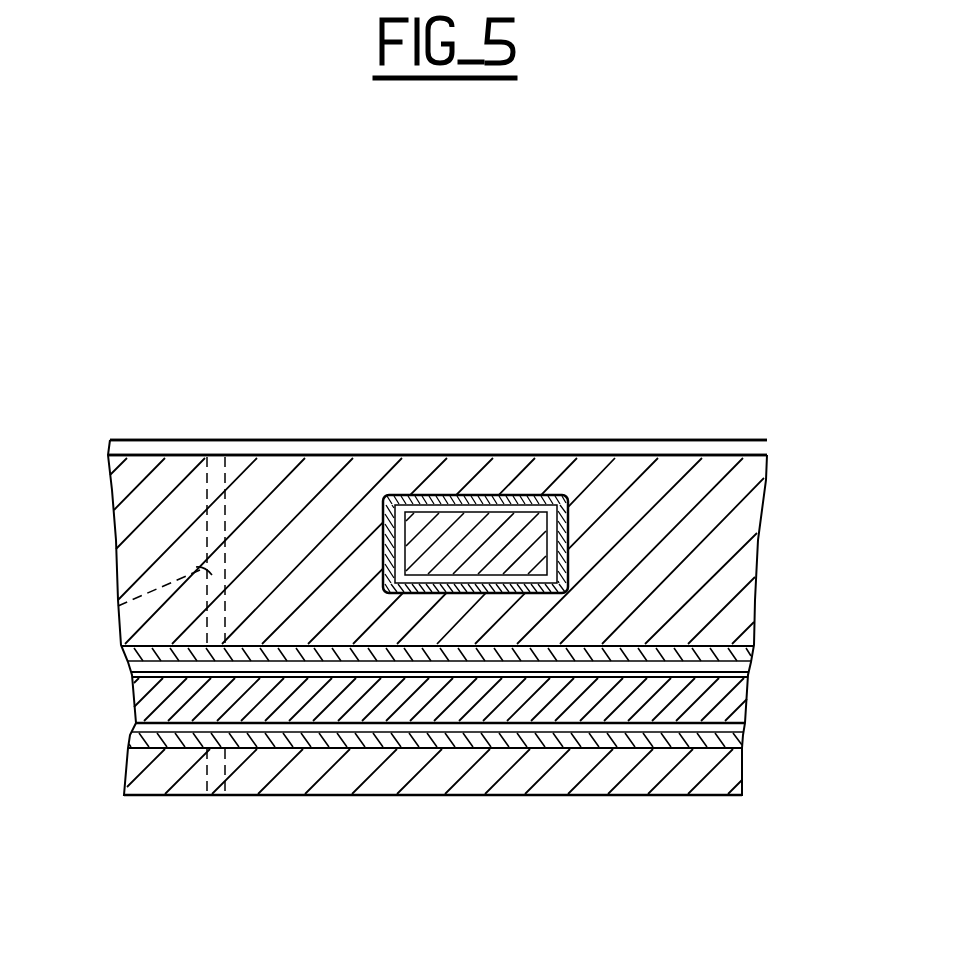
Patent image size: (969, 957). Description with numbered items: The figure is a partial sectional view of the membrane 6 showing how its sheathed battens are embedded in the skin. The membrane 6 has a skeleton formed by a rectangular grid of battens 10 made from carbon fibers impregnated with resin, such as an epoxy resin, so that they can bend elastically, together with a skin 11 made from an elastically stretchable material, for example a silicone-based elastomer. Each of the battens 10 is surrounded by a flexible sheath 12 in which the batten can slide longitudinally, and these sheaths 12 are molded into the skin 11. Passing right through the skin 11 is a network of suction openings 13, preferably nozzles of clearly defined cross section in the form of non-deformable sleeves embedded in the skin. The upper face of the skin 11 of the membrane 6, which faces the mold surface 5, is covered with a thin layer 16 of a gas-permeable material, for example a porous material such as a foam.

The mold surface 5 is at (247, 418).
The membrane 6 is at (822, 410).
The battens 10 is at (482, 538).
The skin 11 is at (660, 513).
The flexible sheaths 12 is at (445, 497).
The suction openings 13 is at (118, 606).
The thin layer of gas-permeable material 16 is at (141, 441).